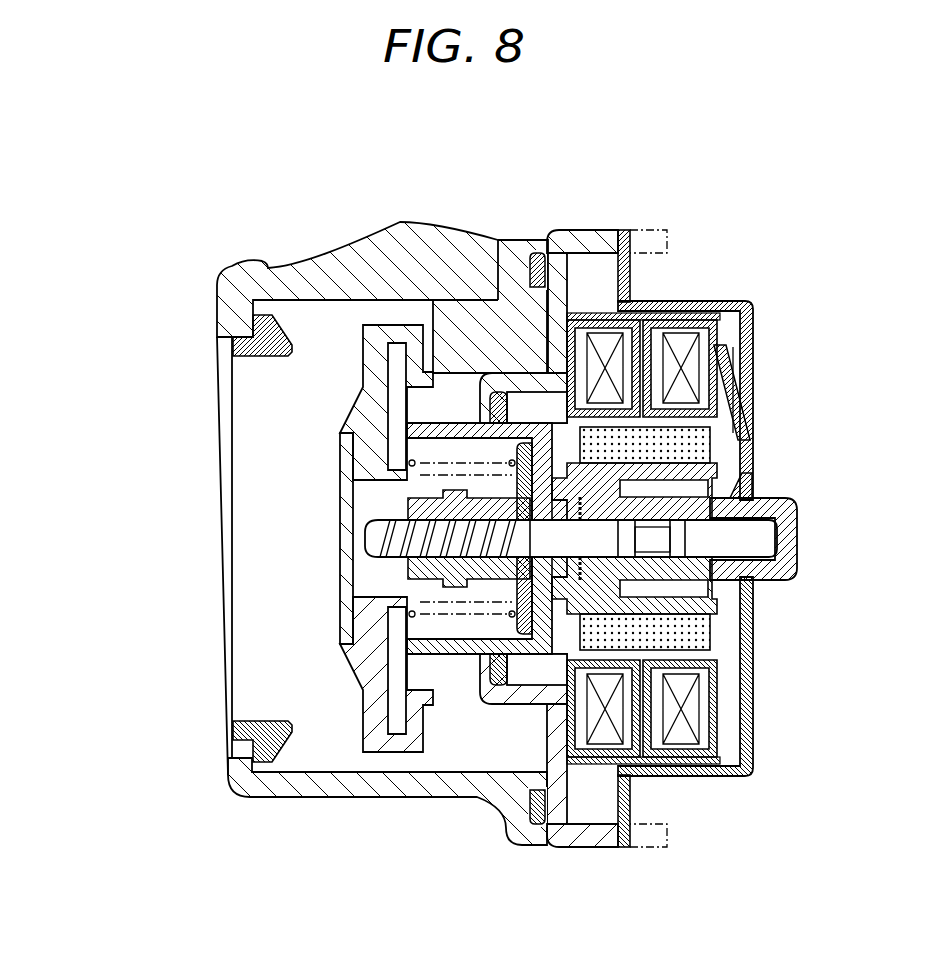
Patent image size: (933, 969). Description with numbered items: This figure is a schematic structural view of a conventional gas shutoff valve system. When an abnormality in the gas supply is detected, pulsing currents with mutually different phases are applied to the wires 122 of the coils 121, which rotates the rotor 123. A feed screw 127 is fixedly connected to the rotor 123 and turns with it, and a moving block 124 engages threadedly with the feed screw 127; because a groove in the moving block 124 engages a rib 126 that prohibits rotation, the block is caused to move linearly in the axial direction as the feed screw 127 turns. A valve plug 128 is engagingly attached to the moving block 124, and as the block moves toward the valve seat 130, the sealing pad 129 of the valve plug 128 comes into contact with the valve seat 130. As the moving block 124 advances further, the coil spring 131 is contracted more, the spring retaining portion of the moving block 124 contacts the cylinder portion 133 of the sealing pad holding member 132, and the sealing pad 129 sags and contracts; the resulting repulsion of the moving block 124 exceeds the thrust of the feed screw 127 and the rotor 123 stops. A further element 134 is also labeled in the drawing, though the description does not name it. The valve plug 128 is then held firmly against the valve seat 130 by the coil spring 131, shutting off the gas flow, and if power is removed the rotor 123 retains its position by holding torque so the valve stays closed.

The coils 121 is at (697, 345).
The wires 122 is at (705, 315).
The rotor 123 is at (753, 440).
The moving block 124 is at (483, 650).
The rib 126 is at (463, 455).
The feed screw 127 is at (365, 538).
The valve plug 128 is at (268, 460).
The sealing pad 129 is at (345, 598).
The valve seat 130 is at (262, 352).
The coil spring 131 is at (385, 595).
The sealing pad holding member 132 is at (340, 660).
The cylinder portion 133 is at (345, 508).
The rotor core 134 is at (500, 652).